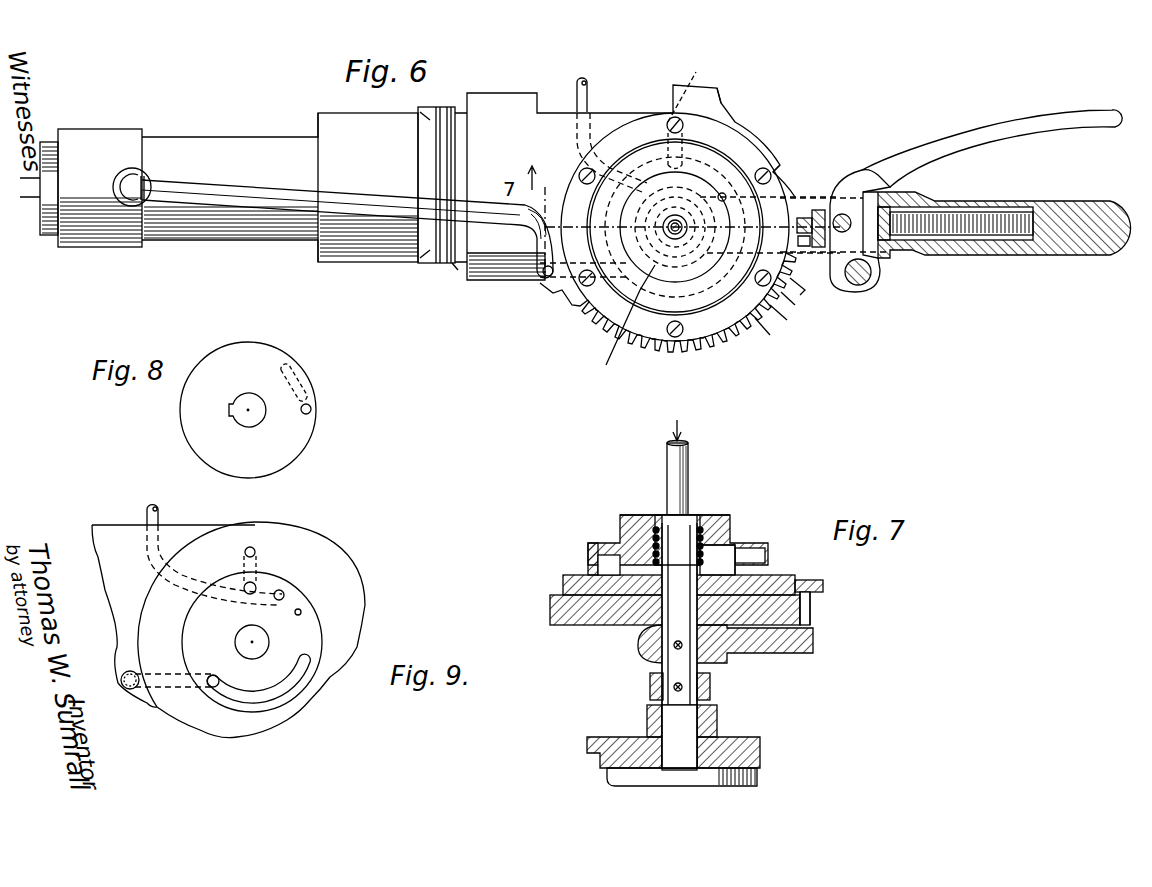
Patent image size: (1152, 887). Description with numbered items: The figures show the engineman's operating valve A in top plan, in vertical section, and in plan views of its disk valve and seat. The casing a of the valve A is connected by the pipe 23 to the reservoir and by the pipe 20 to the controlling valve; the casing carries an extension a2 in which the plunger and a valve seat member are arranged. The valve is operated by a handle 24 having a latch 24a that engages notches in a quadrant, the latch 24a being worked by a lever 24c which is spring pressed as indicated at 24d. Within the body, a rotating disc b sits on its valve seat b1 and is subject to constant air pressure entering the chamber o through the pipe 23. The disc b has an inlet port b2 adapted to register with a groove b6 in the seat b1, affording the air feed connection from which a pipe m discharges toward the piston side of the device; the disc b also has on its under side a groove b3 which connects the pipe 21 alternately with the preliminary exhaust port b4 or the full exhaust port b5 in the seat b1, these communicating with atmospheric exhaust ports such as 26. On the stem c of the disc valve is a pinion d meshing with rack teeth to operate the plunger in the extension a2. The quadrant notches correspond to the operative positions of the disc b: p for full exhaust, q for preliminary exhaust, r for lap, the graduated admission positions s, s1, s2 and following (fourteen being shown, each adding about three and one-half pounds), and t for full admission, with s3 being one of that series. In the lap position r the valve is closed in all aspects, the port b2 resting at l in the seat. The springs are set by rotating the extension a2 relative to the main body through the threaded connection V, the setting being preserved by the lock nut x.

In FIG. 6, the pipe 20 is at (28, 200).
In FIG. 6, the pipe m is at (366, 244).
In FIG. 9, the pipe m is at (122, 688).
In FIG. 6, the threaded connection V is at (438, 107).
In FIG. 6, the lock nut x is at (458, 266).
In FIG. 6, the extension of the casing a2 is at (242, 228).
In FIG. 6, the pipe 21 is at (588, 95).
In FIG. 9, the pipe 21 is at (158, 514).
In FIG. 7, the pipe 21 is at (592, 628).
In FIG. 6, the engineman's operating valve A is at (657, 112).
In FIG. 7, the engineman's operating valve A is at (625, 515).
In FIG. 6, the pipe 23 is at (675, 240).
In FIG. 7, the pipe 23 is at (668, 470).
In FIG. 6, the atmospheric exhaust port 26 is at (696, 114).
In FIG. 9, the atmospheric exhaust port 26 is at (252, 547).
In FIG. 7, the atmospheric exhaust port 26 is at (590, 590).
In FIG. 6, the full exhaust position p is at (733, 120).
In FIG. 6, the preliminary exhaust position q is at (778, 158).
In FIG. 6, the lap position r is at (797, 224).
In FIG. 6, the full admission position t is at (590, 316).
In FIG. 6, the casing a is at (629, 324).
In FIG. 7, the casing a is at (719, 514).
In FIG. 6, the graduated admission position s is at (802, 292).
In FIG. 6, the graduated admission position s1 is at (796, 306).
In FIG. 6, the graduated admission position s2 is at (787, 321).
In FIG. 6, the gear tooth s3 is at (770, 336).
In FIG. 6, the handle 24 is at (997, 223).
In FIG. 7, the handle 24 is at (815, 644).
In FIG. 6, the latch 24a is at (828, 195).
In FIG. 6, the lever 24c is at (1005, 120).
In FIG. 6, the spring 24d is at (957, 235).
In FIG. 8, the rotating disc b is at (186, 418).
In FIG. 7, the rotating disc b is at (606, 564).
In FIG. 9, the valve seat b1 is at (305, 545).
In FIG. 8, the inlet port b2 is at (311, 410).
In FIG. 7, the inlet port b2 is at (768, 568).
In FIG. 8, the groove b3 is at (300, 368).
In FIG. 7, the groove b3 is at (718, 558).
In FIG. 9, the preliminary exhaust port b4 is at (301, 611).
In FIG. 7, the preliminary exhaust port b4 is at (773, 656).
In FIG. 9, the full exhaust port b5 is at (245, 585).
In FIG. 7, the full exhaust port b5 is at (655, 620).
In FIG. 9, the groove b6 is at (293, 680).
In FIG. 9, the lap point l is at (325, 639).
In FIG. 7, the chamber o is at (740, 552).
In FIG. 7, the stem c is at (663, 668).
In FIG. 7, the pinion d is at (712, 688).